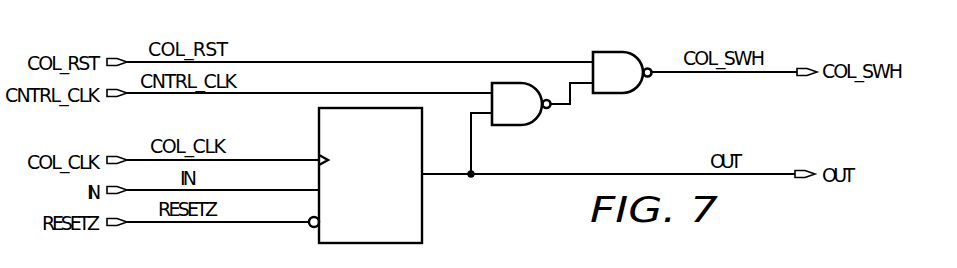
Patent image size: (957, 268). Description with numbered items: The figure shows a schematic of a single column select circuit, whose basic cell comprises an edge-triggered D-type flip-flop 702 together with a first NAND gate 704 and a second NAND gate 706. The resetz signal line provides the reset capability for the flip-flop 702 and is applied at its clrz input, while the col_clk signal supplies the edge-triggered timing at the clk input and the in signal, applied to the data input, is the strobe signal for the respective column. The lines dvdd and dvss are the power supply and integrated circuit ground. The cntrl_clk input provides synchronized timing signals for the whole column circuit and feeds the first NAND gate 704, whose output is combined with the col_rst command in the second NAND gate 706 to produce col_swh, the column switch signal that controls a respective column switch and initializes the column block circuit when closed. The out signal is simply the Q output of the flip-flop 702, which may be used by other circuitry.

The DT820 D flip-flop with clear 702 is at (423, 232).
The first NAND gate 704 is at (516, 126).
The second NAND gate 706 is at (618, 51).